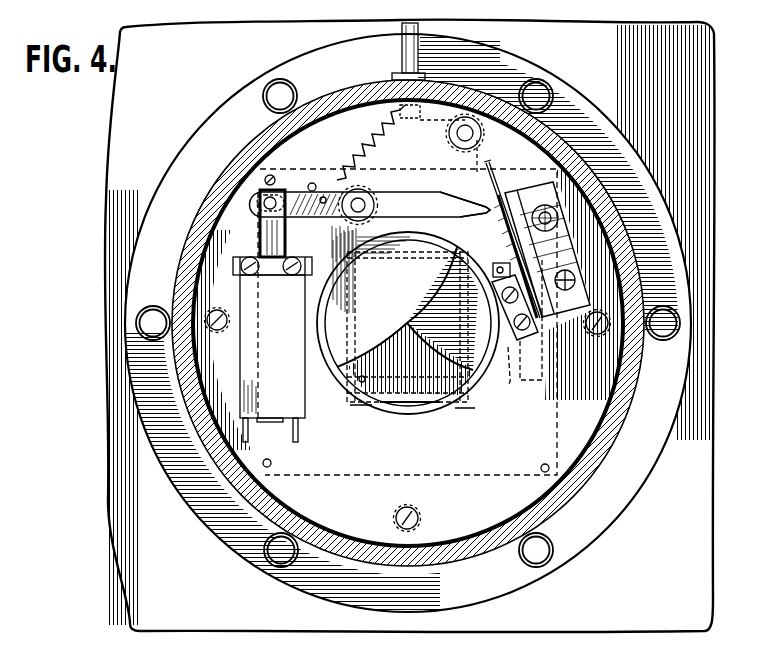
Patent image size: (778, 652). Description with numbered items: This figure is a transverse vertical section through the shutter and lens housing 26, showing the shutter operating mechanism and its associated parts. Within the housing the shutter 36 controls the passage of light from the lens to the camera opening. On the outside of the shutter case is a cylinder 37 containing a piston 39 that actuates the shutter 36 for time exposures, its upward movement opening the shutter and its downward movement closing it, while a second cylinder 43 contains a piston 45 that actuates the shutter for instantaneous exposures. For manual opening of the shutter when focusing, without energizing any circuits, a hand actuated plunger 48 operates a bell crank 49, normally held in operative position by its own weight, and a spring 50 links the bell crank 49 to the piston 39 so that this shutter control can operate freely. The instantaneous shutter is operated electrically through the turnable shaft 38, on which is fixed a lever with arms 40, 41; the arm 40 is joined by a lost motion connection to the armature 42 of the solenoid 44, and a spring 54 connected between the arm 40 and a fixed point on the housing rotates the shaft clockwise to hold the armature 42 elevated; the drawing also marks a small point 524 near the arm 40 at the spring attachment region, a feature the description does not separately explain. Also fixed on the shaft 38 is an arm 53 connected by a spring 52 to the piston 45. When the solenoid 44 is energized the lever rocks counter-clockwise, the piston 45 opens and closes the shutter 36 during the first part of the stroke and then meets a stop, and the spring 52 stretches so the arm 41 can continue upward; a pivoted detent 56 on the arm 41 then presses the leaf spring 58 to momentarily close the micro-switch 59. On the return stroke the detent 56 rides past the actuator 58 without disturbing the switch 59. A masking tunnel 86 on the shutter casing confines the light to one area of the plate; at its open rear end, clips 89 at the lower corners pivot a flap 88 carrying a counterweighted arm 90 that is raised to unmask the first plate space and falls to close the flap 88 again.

The shutter and lens housing 26 is at (607, 438).
The shutter 36 is at (353, 340).
The cylinder 37 is at (507, 386).
The turnable shaft 38 is at (358, 208).
The piston 39 is at (493, 266).
The lever arm 40 is at (292, 193).
The lever arm 41 is at (397, 203).
The armature 42 is at (262, 237).
The second cylinder 43 is at (543, 362).
The solenoid 44 is at (300, 410).
The piston 45 is at (552, 317).
The hand actuated plunger 48 is at (407, 61).
The bell crank 49 is at (477, 161).
The spring 50 is at (505, 232).
The spring 52 is at (560, 262).
The arm 53 is at (560, 238).
The spring 54 is at (390, 130).
The pivoted detent 56 is at (473, 200).
The leaf spring 58 is at (488, 163).
The micro-switch 59 is at (577, 297).
The masking tunnel 86 is at (357, 320).
The flap 88 is at (397, 412).
The clips 89 is at (463, 417).
The counterweighted arm 90 is at (364, 377).
The spring anchor hole 524 is at (312, 183).